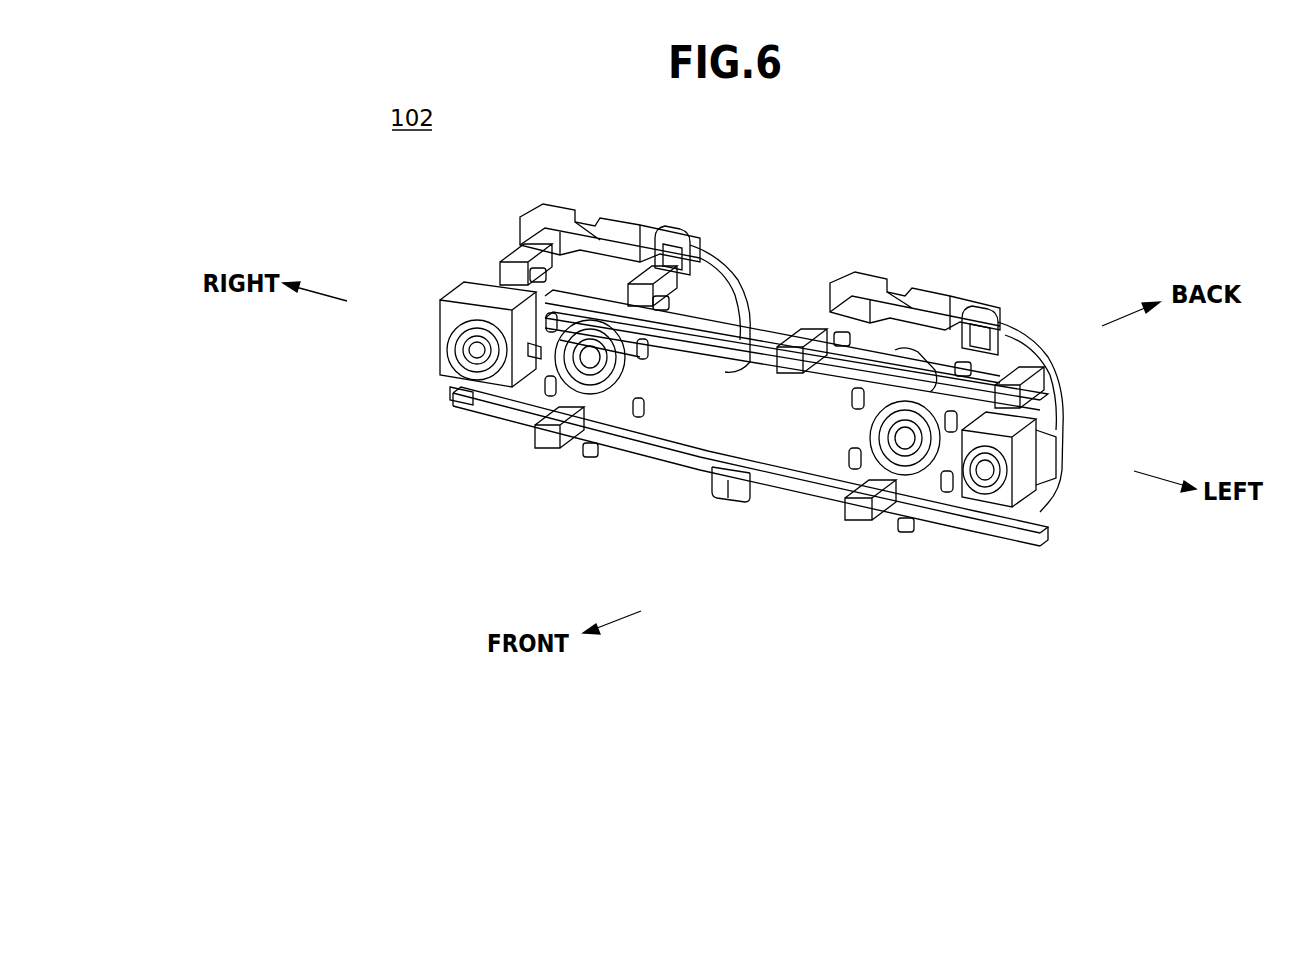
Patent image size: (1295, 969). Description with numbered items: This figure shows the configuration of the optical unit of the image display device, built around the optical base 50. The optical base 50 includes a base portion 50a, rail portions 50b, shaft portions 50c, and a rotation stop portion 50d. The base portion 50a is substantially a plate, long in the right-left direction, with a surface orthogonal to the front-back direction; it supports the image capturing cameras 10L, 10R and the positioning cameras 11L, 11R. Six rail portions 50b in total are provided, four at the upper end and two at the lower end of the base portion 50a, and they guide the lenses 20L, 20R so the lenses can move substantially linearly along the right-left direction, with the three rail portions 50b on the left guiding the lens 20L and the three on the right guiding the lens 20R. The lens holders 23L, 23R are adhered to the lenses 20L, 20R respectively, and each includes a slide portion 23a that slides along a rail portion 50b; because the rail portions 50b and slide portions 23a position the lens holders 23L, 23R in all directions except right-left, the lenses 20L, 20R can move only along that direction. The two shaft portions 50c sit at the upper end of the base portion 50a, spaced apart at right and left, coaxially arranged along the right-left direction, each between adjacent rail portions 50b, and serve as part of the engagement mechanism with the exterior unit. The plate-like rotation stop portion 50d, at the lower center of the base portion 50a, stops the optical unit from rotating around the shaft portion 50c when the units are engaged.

The optical base 50 is at (428, 252).
The base portion 50a is at (735, 415).
The rail portion 50b is at (528, 262).
The shaft portion 50c is at (590, 283).
The rotation stop portion 50d is at (730, 488).
The slide portion 23a is at (532, 268).
The lens holder 23R is at (687, 244).
The lens holder 23L is at (986, 312).
The lens 20R is at (732, 282).
The lens 20L is at (1040, 355).
The positioning camera 11R is at (480, 352).
The positioning camera 11L is at (985, 480).
The image capturing camera 10R is at (597, 373).
The image capturing camera 10L is at (907, 447).